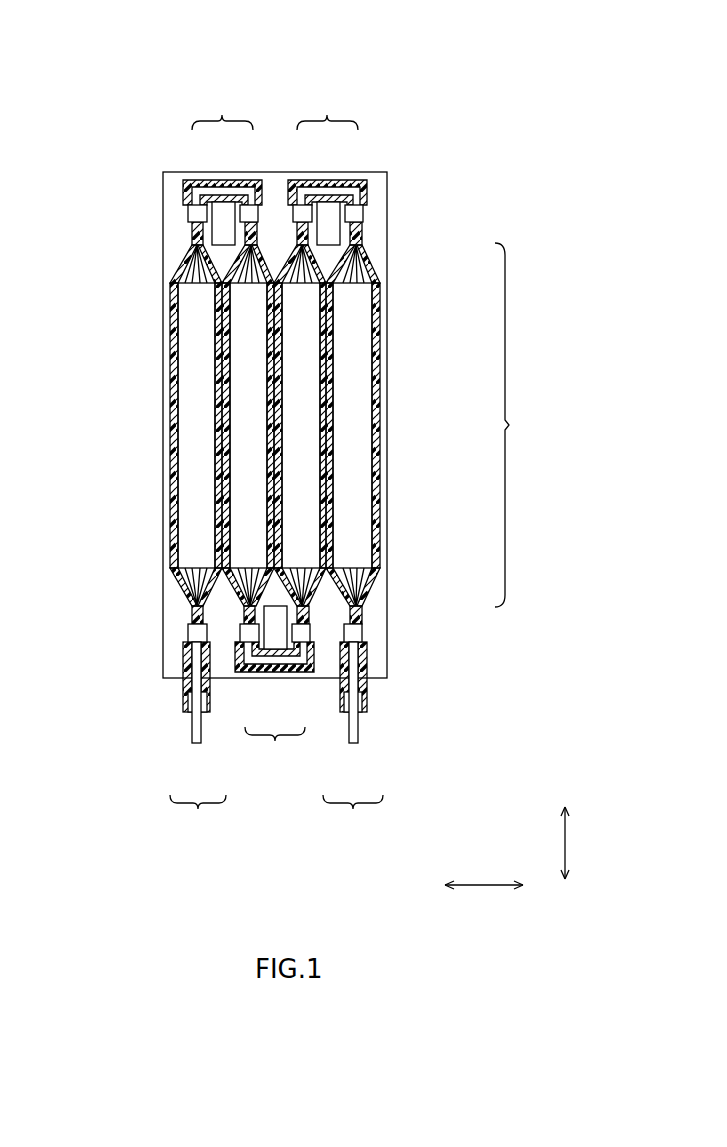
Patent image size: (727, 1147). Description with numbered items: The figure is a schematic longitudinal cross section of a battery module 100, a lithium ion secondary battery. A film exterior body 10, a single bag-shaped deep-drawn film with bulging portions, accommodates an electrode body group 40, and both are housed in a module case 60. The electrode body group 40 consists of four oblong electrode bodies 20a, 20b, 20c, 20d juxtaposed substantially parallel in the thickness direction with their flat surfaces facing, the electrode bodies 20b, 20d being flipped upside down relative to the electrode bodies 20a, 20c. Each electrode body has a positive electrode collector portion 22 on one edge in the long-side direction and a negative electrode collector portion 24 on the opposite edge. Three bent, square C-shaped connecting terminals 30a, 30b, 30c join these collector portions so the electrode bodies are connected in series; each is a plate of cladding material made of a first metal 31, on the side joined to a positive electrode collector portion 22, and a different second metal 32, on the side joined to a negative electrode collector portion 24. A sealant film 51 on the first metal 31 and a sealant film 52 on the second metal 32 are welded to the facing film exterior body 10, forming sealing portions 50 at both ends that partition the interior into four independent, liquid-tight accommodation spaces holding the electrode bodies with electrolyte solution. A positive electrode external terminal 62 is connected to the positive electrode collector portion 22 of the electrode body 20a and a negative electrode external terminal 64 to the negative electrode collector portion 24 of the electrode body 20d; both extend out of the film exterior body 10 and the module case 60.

The battery module 100 is at (410, 72).
The film exterior body 10 is at (168, 380).
The module case 60 is at (161, 468).
The first electrode body 20a is at (368, 326).
The second electrode body 20b is at (318, 380).
The third electrode body 20c is at (262, 432).
The fourth electrode body 20d is at (205, 492).
The positive electrode collector portion 22 is at (280, 270).
The negative electrode collector portion 24 is at (268, 268).
The first connecting terminal 30a is at (327, 111).
The second connecting terminal 30b is at (275, 746).
The third connecting terminal 30c is at (222, 111).
The first metal 31 is at (205, 184).
The second metal 32 is at (238, 197).
The electrode body group 40 is at (521, 425).
The sealing portion 50 is at (99, 200).
The sealant film 51 is at (293, 214).
The sealant film 52 is at (258, 213).
The positive electrode external terminal 62 is at (353, 742).
The negative electrode external terminal 64 is at (198, 742).